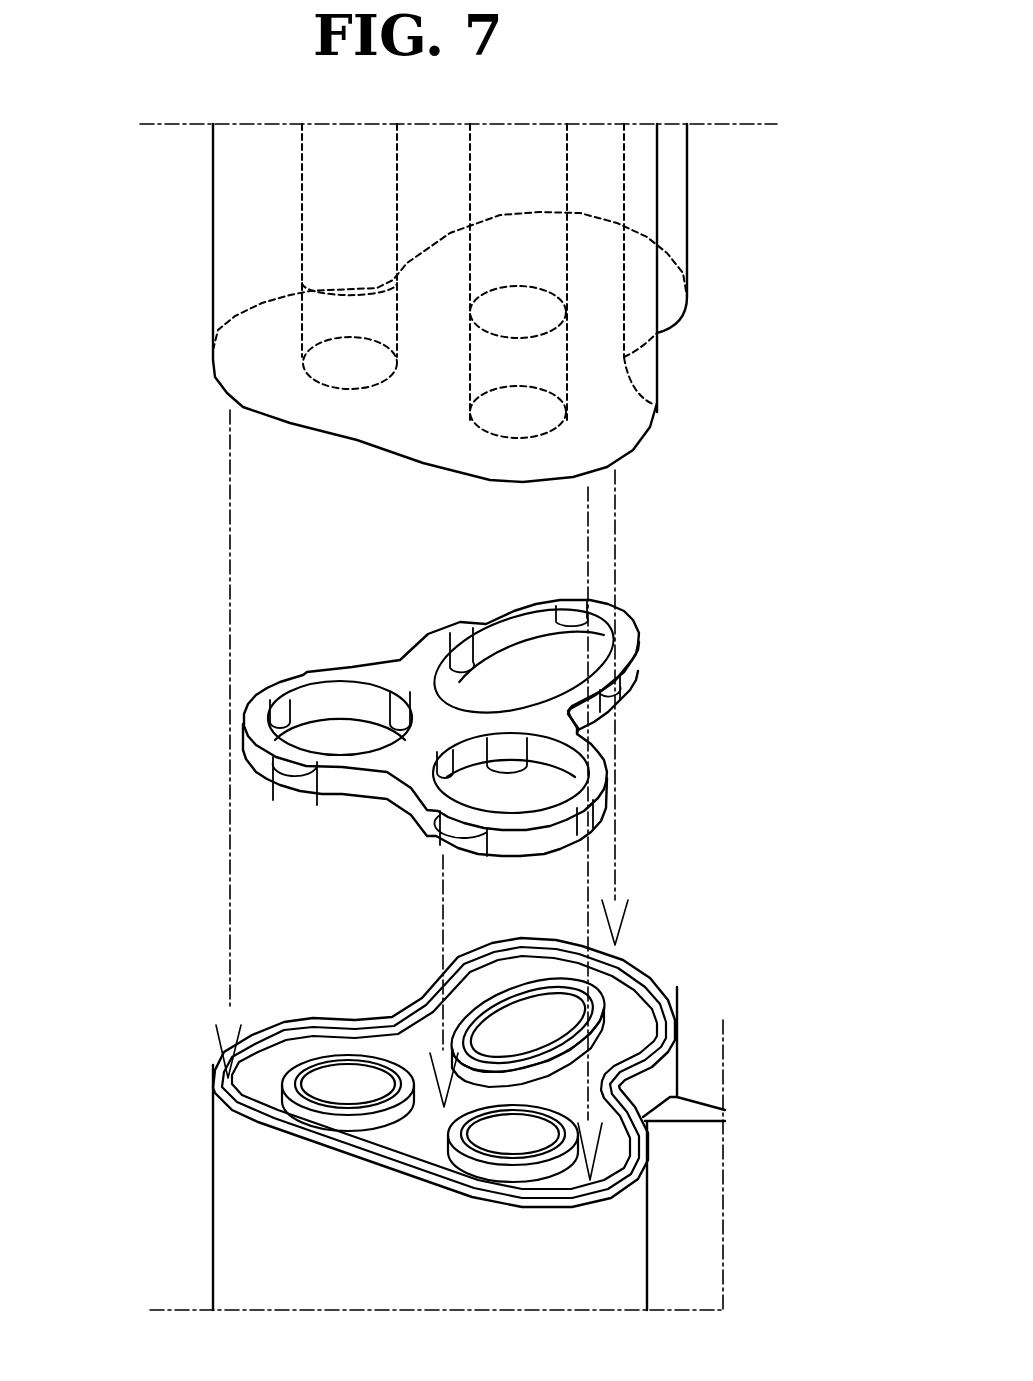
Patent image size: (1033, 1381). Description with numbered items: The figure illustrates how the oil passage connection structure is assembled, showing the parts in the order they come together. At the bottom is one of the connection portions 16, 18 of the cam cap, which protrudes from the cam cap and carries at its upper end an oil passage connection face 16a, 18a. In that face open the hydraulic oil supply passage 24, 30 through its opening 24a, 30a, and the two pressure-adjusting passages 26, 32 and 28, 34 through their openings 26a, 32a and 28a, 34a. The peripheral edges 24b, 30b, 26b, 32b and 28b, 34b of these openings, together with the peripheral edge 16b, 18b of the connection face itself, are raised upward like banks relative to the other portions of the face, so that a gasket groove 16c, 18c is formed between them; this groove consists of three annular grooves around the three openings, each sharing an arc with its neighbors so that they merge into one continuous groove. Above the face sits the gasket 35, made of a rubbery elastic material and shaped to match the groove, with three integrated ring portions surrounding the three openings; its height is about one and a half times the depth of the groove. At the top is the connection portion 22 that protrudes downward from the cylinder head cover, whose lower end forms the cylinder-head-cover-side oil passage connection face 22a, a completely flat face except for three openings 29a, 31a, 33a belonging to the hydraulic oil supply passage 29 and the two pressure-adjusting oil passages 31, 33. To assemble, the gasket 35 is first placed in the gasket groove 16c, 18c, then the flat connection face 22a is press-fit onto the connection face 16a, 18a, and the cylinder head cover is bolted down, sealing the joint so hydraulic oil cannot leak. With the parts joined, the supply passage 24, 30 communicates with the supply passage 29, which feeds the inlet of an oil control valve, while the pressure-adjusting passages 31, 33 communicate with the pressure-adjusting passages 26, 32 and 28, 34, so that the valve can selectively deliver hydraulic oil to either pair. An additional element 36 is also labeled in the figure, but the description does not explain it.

The connection portion 16 is at (452, 1102).
The connection portion 18 is at (452, 1102).
The oil passage connection face 16a is at (444, 1093).
The oil passage connection face 18a is at (387, 1155).
The peripheral edge 16b is at (516, 1072).
The peripheral edge 18b is at (667, 990).
The gasket groove 16c is at (444, 1046).
The gasket groove 18c is at (418, 1060).
The connection portion 22 is at (690, 190).
The cylinder-head-cover-side oil passage connection face 22a is at (623, 430).
The hydraulic oil supply passage 24 is at (636, 995).
The hydraulic oil supply passage 30 is at (636, 995).
The opening 24a is at (525, 985).
The opening 30a is at (520, 1007).
The peripheral edge 24b is at (605, 999).
The peripheral edge 30b is at (630, 1005).
The pressure-adjusting passage 26 is at (242, 1087).
The pressure-adjusting passage 32 is at (242, 1087).
The opening 26a is at (330, 1042).
The opening 32a is at (330, 1077).
The peripheral edge 26b is at (232, 1106).
The peripheral edge 32b is at (345, 1098).
The pressure-adjusting passage 28 is at (639, 1202).
The pressure-adjusting passage 34 is at (639, 1202).
The opening 28a is at (547, 1189).
The opening 34a is at (523, 1140).
The peripheral edge 28b is at (507, 1209).
The peripheral edge 34b is at (547, 1122).
The hydraulic oil supply passage 29 is at (500, 176).
The opening 29a is at (500, 338).
The pressure-adjusting oil passage 31 is at (320, 203).
The opening 31a is at (325, 384).
The pressure-adjusting oil passage 33 is at (550, 367).
The opening 33a is at (470, 438).
The gasket 35 is at (638, 668).
The tab 36 is at (703, 1150).